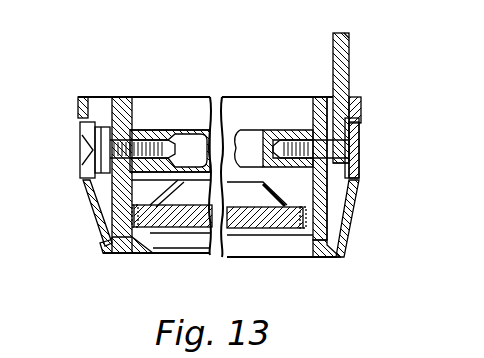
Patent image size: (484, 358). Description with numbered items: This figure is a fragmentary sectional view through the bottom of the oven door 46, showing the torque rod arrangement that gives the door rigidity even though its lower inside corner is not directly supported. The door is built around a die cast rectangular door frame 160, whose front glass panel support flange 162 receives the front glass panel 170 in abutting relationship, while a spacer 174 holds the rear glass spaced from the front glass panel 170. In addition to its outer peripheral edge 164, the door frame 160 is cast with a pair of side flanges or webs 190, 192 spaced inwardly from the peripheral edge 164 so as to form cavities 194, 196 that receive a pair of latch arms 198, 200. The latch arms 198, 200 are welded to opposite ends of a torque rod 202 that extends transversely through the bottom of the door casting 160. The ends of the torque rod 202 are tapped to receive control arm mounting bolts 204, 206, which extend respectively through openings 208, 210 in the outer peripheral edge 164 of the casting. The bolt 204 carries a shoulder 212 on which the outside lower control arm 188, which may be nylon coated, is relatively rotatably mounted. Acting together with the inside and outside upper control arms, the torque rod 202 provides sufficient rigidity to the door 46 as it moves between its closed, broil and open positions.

The oven door 46 is at (153, 97).
The door frame 160 is at (333, 257).
The front glass panel support flange 162 is at (145, 235).
The peripheral edge 164 is at (84, 183).
The front glass panel 170 is at (268, 220).
The spacer 174 is at (175, 185).
The outside lower control arm 188 is at (343, 78).
The side flange or web 190 is at (123, 97).
The side flange or web 192 is at (324, 100).
The cavity 194 is at (105, 222).
The cavity 196 is at (347, 222).
The latch arm 198 is at (118, 100).
The latch arm 200 is at (327, 97).
The torque rod 202 is at (192, 147).
The control arm mounting bolt 204 is at (357, 170).
The control arm mounting bolt 206 is at (88, 163).
The opening 208 is at (358, 122).
The opening 210 is at (80, 128).
The shoulder 212 is at (357, 135).